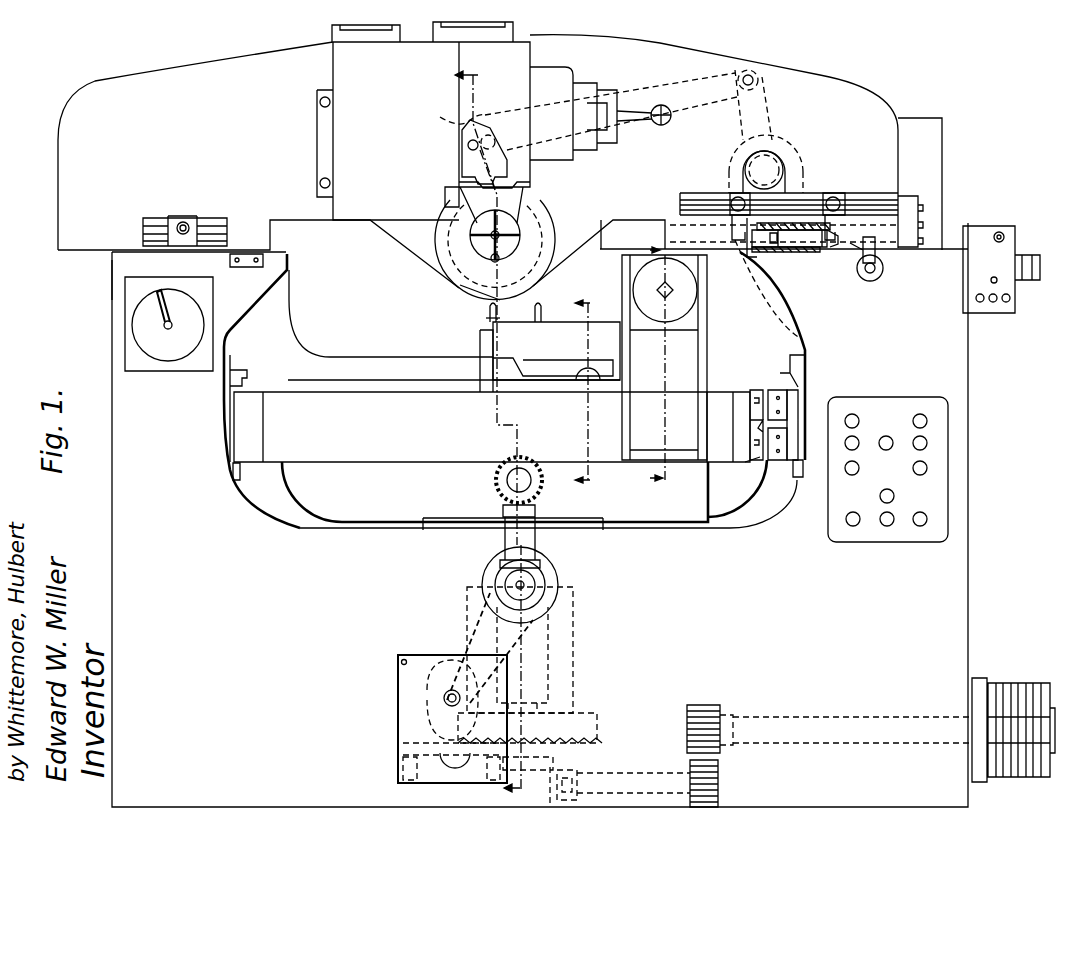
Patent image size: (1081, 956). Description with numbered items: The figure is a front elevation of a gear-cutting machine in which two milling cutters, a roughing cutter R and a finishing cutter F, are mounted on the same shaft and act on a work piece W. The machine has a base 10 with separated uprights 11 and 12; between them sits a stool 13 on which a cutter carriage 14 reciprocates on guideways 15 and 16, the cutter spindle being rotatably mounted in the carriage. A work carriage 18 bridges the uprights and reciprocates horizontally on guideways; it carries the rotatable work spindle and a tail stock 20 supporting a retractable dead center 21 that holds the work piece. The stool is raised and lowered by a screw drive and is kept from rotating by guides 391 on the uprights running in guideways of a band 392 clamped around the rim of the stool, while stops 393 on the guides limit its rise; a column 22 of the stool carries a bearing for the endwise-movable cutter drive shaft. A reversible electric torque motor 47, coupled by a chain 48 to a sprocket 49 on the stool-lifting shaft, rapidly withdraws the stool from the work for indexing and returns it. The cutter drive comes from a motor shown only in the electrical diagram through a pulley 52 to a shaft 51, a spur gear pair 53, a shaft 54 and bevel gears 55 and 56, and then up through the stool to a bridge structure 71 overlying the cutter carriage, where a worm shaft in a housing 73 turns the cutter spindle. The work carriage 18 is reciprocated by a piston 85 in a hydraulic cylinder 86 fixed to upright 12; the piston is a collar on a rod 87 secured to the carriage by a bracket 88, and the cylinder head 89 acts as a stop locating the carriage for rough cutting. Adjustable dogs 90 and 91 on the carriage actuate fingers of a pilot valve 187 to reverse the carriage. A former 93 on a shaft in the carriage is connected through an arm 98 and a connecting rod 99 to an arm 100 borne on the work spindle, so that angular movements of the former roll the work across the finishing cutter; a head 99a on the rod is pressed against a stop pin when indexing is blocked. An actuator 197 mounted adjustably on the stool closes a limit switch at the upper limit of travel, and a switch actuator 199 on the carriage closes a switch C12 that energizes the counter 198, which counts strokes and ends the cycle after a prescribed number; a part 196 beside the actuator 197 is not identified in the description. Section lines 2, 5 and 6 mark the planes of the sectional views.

The base 10 is at (957, 633).
The upright 11 is at (110, 290).
The upright 12 is at (950, 383).
The stool 13 is at (338, 508).
The cutter carriage 14 is at (505, 348).
The guideway 15 is at (523, 382).
The guideway 16 is at (617, 373).
The work carriage 18 is at (712, 57).
The tail stock 20 is at (520, 204).
The dead center 21 is at (788, 446).
The column 22 is at (787, 404).
The reversible electric torque motor 47 is at (427, 688).
The chain 48 is at (468, 637).
The sprocket 49 is at (560, 577).
The shaft 51 is at (873, 720).
The pulley 52 is at (1013, 681).
The spur gear pair 53 is at (722, 762).
The shaft 54 is at (647, 783).
The bevel gear 55 is at (578, 772).
The bevel gear 56 is at (530, 758).
The bridge structure 71 is at (690, 325).
The housing 73 is at (682, 275).
The piston 85 is at (780, 252).
The hydraulic cylinder 86 is at (810, 240).
The rod 87 is at (828, 254).
The bracket 88 is at (905, 200).
The cylinder head 89 is at (743, 262).
The adjustable dog 90 is at (730, 193).
The adjustable dog 91 is at (836, 198).
The former 93 is at (800, 316).
The arm 98 is at (768, 117).
The connecting rod 99 is at (637, 88).
The head 99a is at (447, 118).
The arm 100 is at (462, 165).
The pilot valve 187 is at (873, 281).
The stop 196 is at (758, 460).
The actuator 197 is at (748, 415).
The counter 198 is at (185, 360).
The switch actuator 199 is at (176, 221).
The guides 391 is at (233, 480).
The band 392 is at (455, 438).
The stops 393 is at (243, 370).
The switch C12 is at (247, 263).
The work piece W is at (458, 288).
The roughing cutter R is at (486, 318).
The finishing cutter F is at (542, 307).
The section line 2 is at (488, 431).
The section line 5 is at (634, 365).
The section line 6 is at (585, 397).